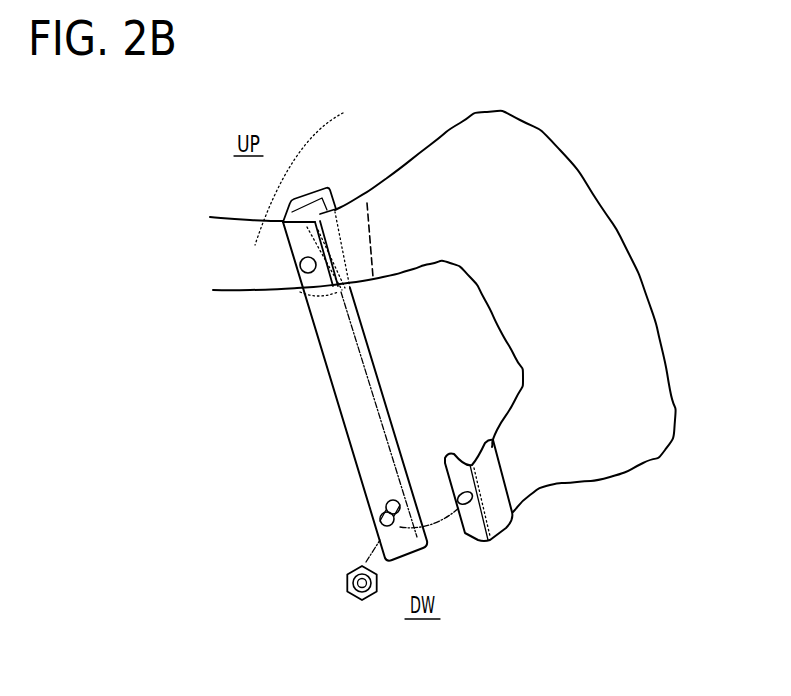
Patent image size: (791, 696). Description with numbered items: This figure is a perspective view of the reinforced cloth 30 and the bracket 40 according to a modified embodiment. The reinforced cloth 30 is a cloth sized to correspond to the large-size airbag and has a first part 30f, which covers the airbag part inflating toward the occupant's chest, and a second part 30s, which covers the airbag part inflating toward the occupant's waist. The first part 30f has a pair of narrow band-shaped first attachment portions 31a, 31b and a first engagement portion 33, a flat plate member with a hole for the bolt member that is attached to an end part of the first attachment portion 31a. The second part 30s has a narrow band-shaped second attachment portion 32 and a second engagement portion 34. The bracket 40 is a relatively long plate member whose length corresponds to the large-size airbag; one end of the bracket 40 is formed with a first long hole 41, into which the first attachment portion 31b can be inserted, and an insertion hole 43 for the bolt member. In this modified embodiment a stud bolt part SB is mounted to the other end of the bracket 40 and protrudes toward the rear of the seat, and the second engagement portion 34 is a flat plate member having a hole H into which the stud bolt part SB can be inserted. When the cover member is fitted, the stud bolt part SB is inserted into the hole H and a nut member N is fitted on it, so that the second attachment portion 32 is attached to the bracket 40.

The reinforced cloth 30 is at (628, 250).
The first part 30f is at (510, 177).
The second part 30s is at (634, 437).
The first attachment portion 31a is at (319, 169).
The first attachment portion 31b is at (383, 213).
The second attachment portion 32 is at (527, 460).
The first engagement portion 33 is at (307, 195).
The second engagement portion 34 is at (498, 517).
The bracket 40 is at (340, 410).
The first long hole 41 is at (335, 293).
The insertion hole 43 is at (290, 297).
The stud bolt part SB is at (380, 523).
The nut member N is at (347, 583).
The hole H is at (473, 540).